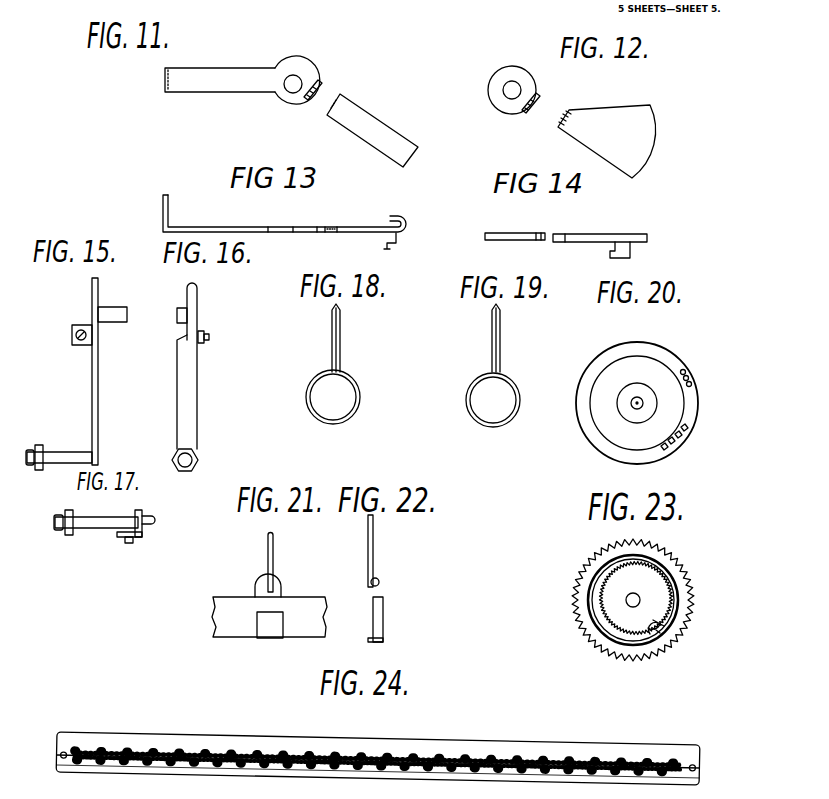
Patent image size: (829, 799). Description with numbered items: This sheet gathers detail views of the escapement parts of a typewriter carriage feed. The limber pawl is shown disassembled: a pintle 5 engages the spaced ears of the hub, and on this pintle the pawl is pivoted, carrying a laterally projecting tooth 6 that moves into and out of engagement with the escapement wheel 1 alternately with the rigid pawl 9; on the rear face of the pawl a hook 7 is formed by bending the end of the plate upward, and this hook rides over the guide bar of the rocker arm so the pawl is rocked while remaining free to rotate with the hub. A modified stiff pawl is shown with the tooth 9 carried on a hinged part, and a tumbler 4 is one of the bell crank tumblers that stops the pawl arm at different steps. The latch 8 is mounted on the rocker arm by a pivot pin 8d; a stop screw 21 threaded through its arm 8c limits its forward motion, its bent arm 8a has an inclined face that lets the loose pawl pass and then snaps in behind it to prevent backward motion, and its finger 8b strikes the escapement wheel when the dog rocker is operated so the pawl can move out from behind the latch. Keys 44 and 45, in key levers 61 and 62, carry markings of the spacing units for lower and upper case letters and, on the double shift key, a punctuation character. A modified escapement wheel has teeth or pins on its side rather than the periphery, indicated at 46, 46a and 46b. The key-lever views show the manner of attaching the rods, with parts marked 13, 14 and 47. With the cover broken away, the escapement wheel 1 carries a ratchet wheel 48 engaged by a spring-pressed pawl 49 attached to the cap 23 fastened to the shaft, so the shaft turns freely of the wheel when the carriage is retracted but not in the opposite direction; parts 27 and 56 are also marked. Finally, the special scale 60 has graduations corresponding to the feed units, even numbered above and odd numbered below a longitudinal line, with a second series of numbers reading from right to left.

In FIG. 23, the escapement wheel 1 is at (678, 556).
In FIG. 12, the tumbler 4 is at (529, 70).
In FIG. 14, the tumbler 4 is at (546, 231).
In FIG. 11, the pintle 5 is at (295, 73).
In FIG. 13, the pintle 5 is at (323, 228).
In FIG. 11, the tooth 6 is at (168, 67).
In FIG. 12, the tooth 6 is at (543, 86).
In FIG. 13, the tooth 6 is at (167, 199).
In FIG. 14, the tooth 6 is at (611, 258).
In FIG. 13, the hook 7 is at (408, 222).
In FIG. 15, the latch 8 is at (99, 282).
In FIG. 16, the latch 8 is at (194, 393).
In FIG. 17, the latch 8 is at (139, 510).
In FIG. 15, the latch arm 8a is at (127, 306).
In FIG. 16, the latch arm 8a is at (177, 316).
In FIG. 16, the finger 8b is at (199, 288).
In FIG. 17, the finger 8b is at (152, 515).
In FIG. 15, the arm 8c is at (72, 338).
In FIG. 16, the arm 8c is at (201, 333).
In FIG. 17, the arm 8c is at (72, 512).
In FIG. 15, the pivot pin 8d is at (63, 453).
In FIG. 16, the pivot pin 8d is at (198, 459).
In FIG. 17, the pivot pin 8d is at (91, 518).
In FIG. 12, the rigid pawl 9 is at (623, 100).
In FIG. 14, the rigid pawl 9 is at (528, 232).
In FIG. 21, the pointer stem 13 is at (275, 546).
In FIG. 22, the pointer stem 13 is at (374, 533).
In FIG. 21, the mounting plate 14 is at (232, 603).
In FIG. 22, the mounting plate 14 is at (383, 606).
In FIG. 15, the stop screw 21 is at (73, 333).
In FIG. 16, the stop screw 21 is at (210, 338).
In FIG. 17, the stop screw 21 is at (126, 543).
In FIG. 20, the cap 23 is at (682, 403).
In FIG. 23, the gear wheel 27 is at (624, 600).
In FIG. 18, the key 44 is at (352, 378).
In FIG. 19, the key 45 is at (513, 379).
In FIG. 20, the dial wheel 46 is at (683, 359).
In FIG. 20, the dial markings 46a is at (667, 454).
In FIG. 20, the dial holes 46b is at (692, 378).
In FIG. 21, the pointer loop 47 is at (285, 587).
In FIG. 22, the pointer loop 47 is at (378, 590).
In FIG. 23, the ratchet wheel 48 is at (658, 588).
In FIG. 23, the spring-pressed pawl 49 is at (678, 618).
In FIG. 23, the spring 56 is at (678, 598).
In FIG. 24, the scale 60 is at (73, 735).
In FIG. 18, the key lever 61 is at (338, 338).
In FIG. 19, the key lever 62 is at (501, 318).